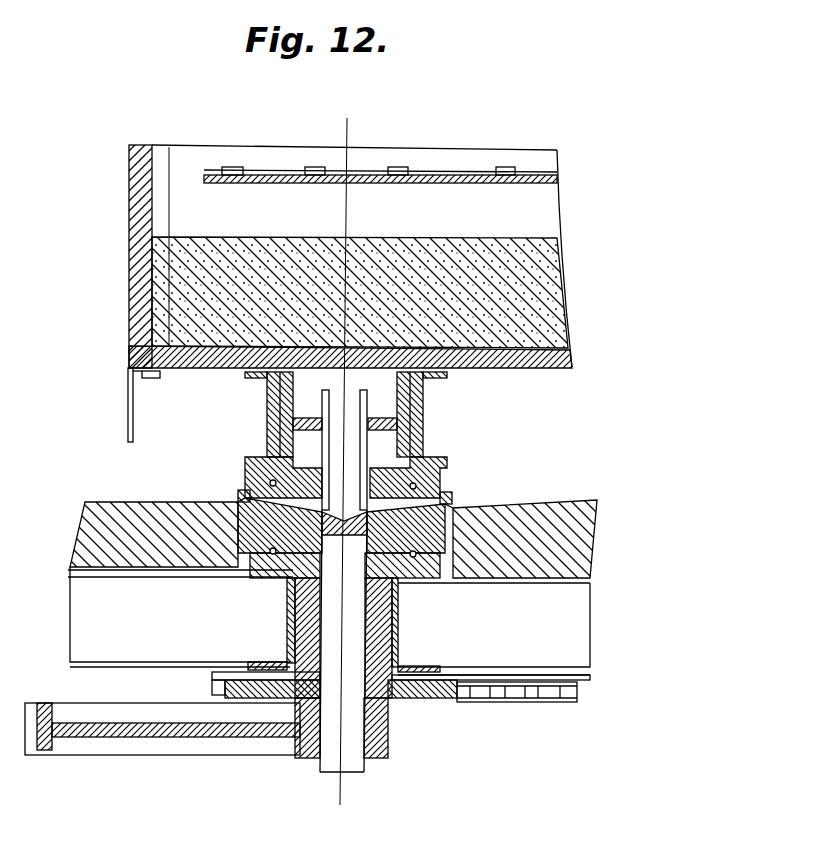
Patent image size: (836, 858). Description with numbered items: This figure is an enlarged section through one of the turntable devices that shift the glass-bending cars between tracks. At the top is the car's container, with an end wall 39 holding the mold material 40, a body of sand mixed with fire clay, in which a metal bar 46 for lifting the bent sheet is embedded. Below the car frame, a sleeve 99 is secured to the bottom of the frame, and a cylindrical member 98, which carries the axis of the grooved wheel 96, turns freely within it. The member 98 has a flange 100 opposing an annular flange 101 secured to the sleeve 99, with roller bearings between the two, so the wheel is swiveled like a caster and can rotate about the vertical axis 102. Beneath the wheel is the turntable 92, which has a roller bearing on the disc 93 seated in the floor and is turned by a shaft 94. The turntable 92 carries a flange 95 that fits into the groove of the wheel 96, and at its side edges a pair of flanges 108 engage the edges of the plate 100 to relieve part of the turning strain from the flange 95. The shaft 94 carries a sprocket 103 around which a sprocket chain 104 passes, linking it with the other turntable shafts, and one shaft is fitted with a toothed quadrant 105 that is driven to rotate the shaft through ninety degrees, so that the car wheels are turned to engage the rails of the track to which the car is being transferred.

The end wall 39 is at (129, 226).
The metal bar 46 is at (406, 223).
The mold material 40 is at (546, 321).
The sleeve 99 is at (267, 401).
The vertical axis 102 is at (350, 376).
The cylindrical member 98 is at (300, 423).
The wheel 96 is at (356, 438).
The flange 100 is at (268, 456).
The flange 108 is at (238, 494).
The annular flange 101 is at (444, 494).
The flange 95 is at (413, 468).
The turntable 92 is at (540, 507).
The disc 93 is at (440, 582).
The shaft 94 is at (393, 641).
The sprocket 103 is at (413, 694).
The sprocket chain 104 is at (593, 695).
The toothed quadrant 105 is at (188, 740).